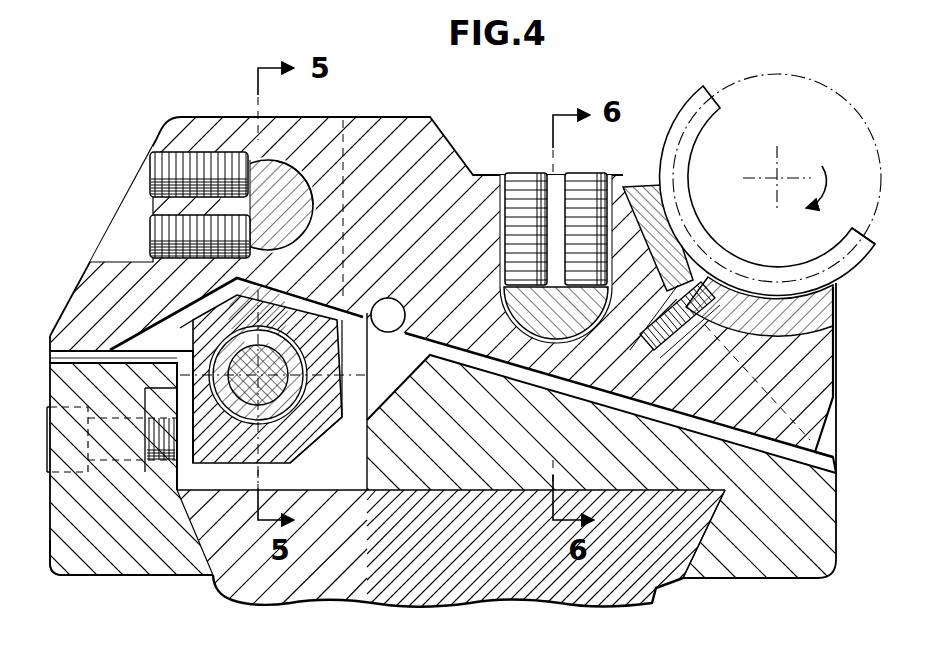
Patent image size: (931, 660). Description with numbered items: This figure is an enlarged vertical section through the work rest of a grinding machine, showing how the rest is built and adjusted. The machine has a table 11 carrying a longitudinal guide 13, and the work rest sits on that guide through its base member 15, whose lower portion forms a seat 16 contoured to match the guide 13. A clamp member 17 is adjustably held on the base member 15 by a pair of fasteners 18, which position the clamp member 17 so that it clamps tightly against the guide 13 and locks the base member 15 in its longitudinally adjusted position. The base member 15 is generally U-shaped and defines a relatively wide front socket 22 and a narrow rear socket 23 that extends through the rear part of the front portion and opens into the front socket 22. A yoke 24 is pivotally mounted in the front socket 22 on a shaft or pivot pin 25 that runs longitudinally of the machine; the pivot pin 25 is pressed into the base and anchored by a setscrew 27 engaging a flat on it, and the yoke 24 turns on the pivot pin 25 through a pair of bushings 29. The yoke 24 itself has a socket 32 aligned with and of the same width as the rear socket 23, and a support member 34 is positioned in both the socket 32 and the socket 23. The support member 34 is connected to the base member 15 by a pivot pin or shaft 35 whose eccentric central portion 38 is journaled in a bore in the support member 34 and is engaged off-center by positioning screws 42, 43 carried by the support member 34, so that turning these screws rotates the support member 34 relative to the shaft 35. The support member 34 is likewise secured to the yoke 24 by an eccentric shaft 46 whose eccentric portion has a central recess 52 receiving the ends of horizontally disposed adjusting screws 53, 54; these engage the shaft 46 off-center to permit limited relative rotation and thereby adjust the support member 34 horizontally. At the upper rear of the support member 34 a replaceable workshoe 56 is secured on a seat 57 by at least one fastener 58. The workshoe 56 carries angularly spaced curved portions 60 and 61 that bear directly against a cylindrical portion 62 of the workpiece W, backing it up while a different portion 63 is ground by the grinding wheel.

The table 11 is at (305, 603).
The guide 13 is at (660, 555).
The base member 15 is at (818, 524).
The seat 16 is at (452, 493).
The clamp member 17 is at (63, 527).
The fasteners 18 is at (152, 472).
The front socket 22 is at (357, 413).
The rear socket 23 is at (828, 450).
The yoke 24 is at (287, 457).
The shaft 25 is at (285, 367).
The setscrew 27 is at (170, 326).
The bushings 29 is at (360, 420).
The socket 32 is at (388, 329).
The support member 34 is at (408, 115).
The pivot pin 35 is at (563, 327).
The eccentric central portion 38 is at (537, 311).
The positioning screw 42 is at (523, 173).
The positioning screw 43 is at (592, 173).
The pivot pin 46 is at (294, 160).
The recess 52 is at (253, 203).
The adjusting screw 53 is at (150, 172).
The adjusting screw 54 is at (150, 228).
The workshoe 56 is at (824, 307).
The seat 57 is at (817, 330).
The fastener 58 is at (680, 318).
The curved portion 60 is at (660, 180).
The curved portion 61 is at (853, 230).
The cylindrical portion 62 is at (683, 103).
The portion being ground 63 is at (730, 132).
The workpiece w is at (828, 171).